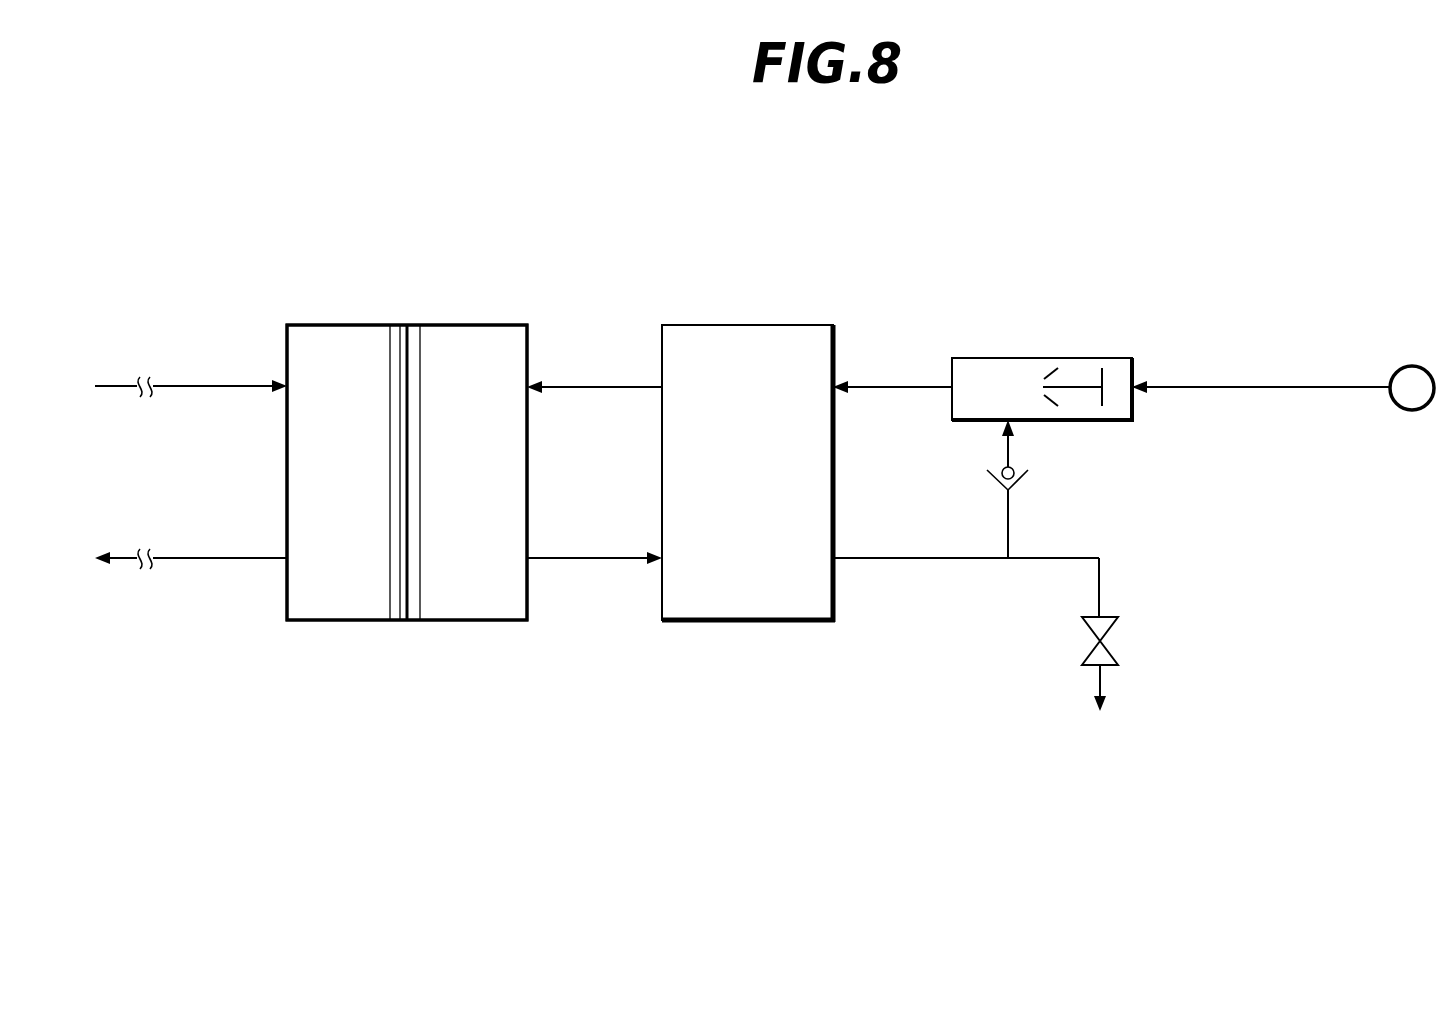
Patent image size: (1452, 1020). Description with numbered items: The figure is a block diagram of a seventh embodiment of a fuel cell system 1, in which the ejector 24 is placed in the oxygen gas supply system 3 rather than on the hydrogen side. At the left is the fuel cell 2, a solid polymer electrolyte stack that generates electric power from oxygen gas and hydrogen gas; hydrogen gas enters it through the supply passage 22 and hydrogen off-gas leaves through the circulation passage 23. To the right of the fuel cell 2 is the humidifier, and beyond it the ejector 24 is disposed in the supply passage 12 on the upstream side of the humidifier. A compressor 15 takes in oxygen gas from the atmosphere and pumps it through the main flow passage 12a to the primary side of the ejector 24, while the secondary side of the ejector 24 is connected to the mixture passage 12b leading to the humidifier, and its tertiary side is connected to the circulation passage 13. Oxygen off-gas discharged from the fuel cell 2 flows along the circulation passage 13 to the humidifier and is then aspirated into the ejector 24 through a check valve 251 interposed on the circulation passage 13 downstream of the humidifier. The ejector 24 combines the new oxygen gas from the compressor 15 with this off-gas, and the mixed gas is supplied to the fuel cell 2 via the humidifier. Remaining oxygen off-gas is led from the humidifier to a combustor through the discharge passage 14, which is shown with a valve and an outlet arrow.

The fuel cell system 1 is at (496, 750).
The fuel cell 2 is at (455, 324).
The oxygen gas supply system 3 is at (867, 660).
The supply passage 12 is at (1112, 270).
The main flow passage 12a is at (1168, 386).
The mixture passage 12b is at (600, 384).
The circulation passage 13 is at (597, 556).
The discharge passage 14 is at (1100, 575).
The compressor 15 is at (1413, 365).
The supply passage 22 is at (214, 383).
The circulation passage 23 is at (214, 556).
The ejector 24 is at (1135, 406).
The check valve 251 is at (1030, 472).